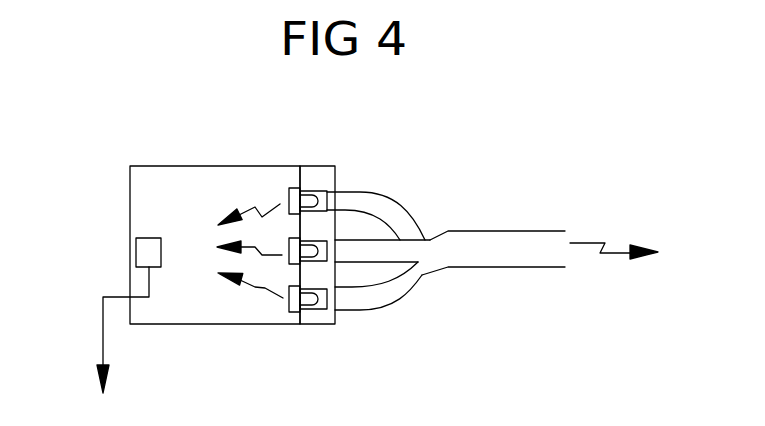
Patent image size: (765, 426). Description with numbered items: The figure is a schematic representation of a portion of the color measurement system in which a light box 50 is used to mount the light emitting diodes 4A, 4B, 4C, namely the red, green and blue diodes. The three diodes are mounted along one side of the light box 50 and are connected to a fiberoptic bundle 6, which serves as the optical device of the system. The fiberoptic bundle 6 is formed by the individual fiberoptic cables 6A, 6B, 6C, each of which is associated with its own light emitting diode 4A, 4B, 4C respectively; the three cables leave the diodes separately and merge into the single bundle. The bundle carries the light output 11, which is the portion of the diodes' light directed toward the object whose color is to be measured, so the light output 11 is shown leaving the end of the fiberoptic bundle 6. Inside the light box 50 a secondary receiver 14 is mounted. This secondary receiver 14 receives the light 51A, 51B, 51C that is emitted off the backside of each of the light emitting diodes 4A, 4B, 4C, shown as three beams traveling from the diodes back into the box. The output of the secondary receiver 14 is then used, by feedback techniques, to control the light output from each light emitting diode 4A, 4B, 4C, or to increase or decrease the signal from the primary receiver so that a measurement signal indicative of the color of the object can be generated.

The light box 50 is at (142, 166).
The secondary receiver 14 is at (136, 252).
The red light emitting diode 4A is at (317, 203).
The green light emitting diode 4B is at (385, 248).
The blue light emitting diode 4C is at (314, 302).
The fiberoptic cable 6A is at (370, 203).
The fiberoptic cable 6B is at (318, 248).
The fiberoptic cable 6C is at (395, 288).
The fiberoptic bundle 6 is at (530, 243).
The light output 11 is at (595, 242).
The light emitted off the backside of the red light emitting diode 51A is at (247, 207).
The light emitted off the backside of the green light emitting diode 51B is at (256, 247).
The light emitted off the backside of the blue light emitting diode 51C is at (257, 288).